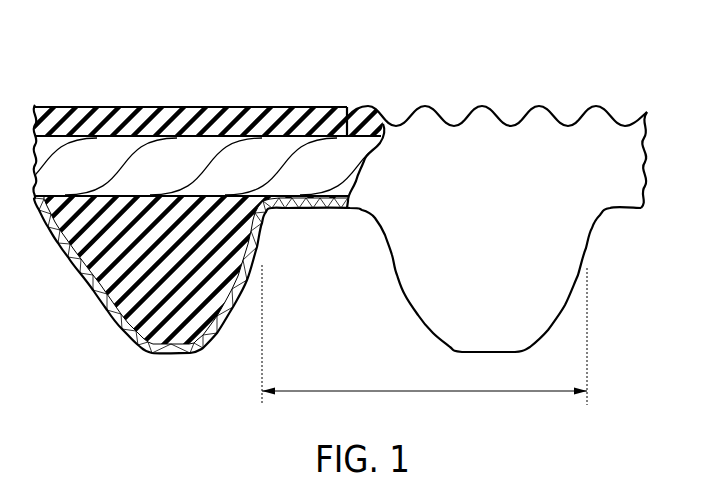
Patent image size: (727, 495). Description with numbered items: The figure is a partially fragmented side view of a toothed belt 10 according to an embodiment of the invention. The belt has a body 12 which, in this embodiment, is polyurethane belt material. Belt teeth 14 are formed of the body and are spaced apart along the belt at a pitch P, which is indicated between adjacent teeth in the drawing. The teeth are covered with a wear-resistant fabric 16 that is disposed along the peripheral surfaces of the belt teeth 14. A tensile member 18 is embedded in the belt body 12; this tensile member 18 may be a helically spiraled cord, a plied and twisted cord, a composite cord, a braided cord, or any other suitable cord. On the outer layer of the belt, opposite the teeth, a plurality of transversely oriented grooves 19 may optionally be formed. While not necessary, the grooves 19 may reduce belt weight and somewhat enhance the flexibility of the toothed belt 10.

The toothed belt 10 is at (366, 50).
The body 12 is at (186, 115).
The belt teeth 14 is at (232, 335).
The wear-resistant fabric 16 is at (63, 255).
The tensile member 18 is at (97, 153).
The grooves 19 is at (517, 106).